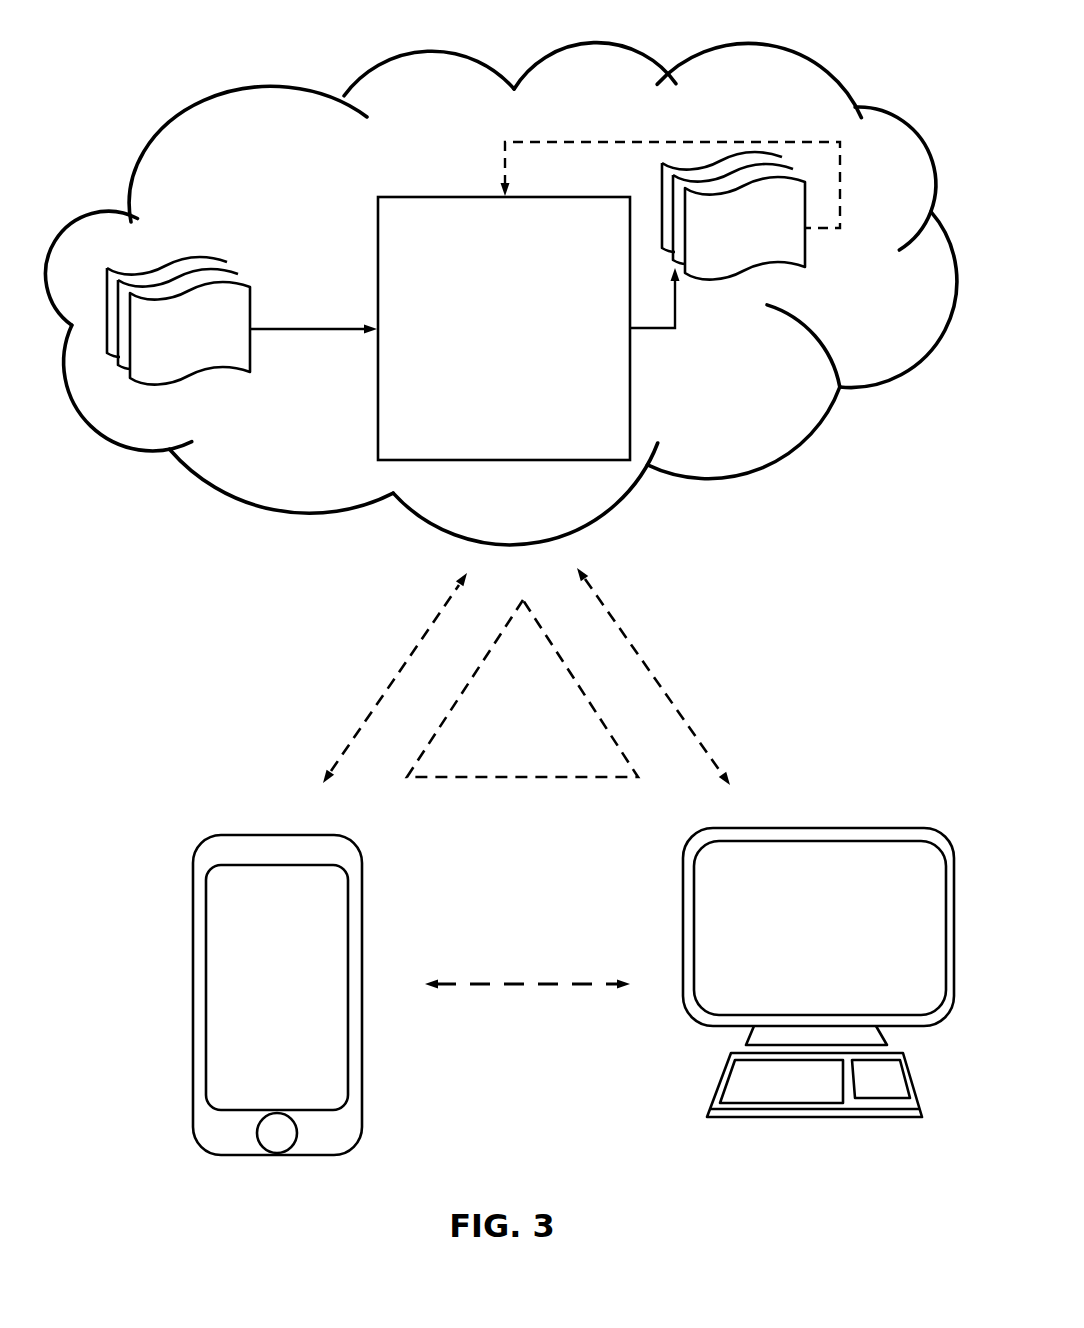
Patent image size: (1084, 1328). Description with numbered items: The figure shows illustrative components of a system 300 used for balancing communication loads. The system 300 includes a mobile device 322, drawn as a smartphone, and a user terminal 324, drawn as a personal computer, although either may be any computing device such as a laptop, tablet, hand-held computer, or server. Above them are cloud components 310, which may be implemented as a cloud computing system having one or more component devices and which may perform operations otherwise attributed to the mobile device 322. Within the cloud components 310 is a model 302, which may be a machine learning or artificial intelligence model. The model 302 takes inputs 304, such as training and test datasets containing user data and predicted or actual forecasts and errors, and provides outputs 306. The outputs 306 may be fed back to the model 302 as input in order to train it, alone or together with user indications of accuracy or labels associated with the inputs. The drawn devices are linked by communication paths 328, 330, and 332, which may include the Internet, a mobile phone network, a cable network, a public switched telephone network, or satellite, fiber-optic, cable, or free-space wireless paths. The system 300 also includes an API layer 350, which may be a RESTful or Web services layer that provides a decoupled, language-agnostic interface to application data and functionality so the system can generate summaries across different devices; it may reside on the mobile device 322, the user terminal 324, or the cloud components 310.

The system 300 is at (518, 34).
The model 302 is at (486, 340).
The inputs 304 is at (195, 252).
The outputs 306 is at (785, 258).
The cloud components 310 is at (802, 102).
The mobile device 322 is at (263, 810).
The user terminal 324 is at (812, 817).
The communication path 328 is at (348, 665).
The communication path 330 is at (730, 635).
The communication path 332 is at (518, 957).
The API layer 350 is at (507, 714).